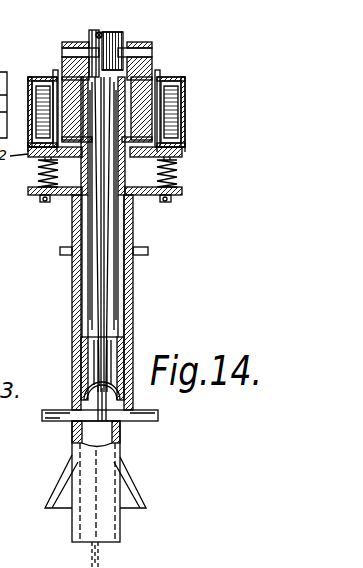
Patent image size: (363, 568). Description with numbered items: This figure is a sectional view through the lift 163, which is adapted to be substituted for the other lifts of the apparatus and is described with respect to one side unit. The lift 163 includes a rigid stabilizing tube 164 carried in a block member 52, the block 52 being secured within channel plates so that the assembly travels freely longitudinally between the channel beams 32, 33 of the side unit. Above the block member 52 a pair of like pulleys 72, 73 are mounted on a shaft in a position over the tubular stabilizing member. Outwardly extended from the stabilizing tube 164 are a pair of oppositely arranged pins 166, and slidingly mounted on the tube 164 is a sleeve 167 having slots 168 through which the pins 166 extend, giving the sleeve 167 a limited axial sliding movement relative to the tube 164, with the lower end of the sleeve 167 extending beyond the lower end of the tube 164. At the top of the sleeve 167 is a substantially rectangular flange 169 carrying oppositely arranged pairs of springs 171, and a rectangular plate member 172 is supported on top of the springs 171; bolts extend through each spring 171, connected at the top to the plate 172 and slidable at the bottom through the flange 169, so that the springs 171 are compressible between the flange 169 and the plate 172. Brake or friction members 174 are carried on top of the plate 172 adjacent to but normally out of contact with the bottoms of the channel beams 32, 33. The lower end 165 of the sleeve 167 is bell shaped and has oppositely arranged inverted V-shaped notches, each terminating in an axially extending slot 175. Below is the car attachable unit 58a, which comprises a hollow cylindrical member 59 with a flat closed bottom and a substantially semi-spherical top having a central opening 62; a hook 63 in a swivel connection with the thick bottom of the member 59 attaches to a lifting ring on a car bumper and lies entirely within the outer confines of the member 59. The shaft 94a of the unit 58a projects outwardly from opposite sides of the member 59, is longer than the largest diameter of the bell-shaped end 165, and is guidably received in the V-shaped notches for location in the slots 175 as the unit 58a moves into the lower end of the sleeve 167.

The pulley 72 is at (91, 45).
The pulley 73 is at (122, 39).
The channel beam 32 is at (38, 74).
The channel beam 33 is at (186, 111).
The block member 52 is at (157, 76).
The brake or friction members 174 is at (187, 150).
The plate member 172 is at (185, 155).
The springs 171 is at (183, 178).
The flange 169 is at (153, 198).
The stabilizing tube 164 is at (80, 180).
The lift 163 is at (136, 309).
The sleeve 167 is at (73, 310).
The slots 168 is at (68, 270).
The pins 166 is at (66, 254).
The cylindrical member 59 is at (78, 397).
The central opening 62 is at (121, 387).
The shaft 94a is at (50, 416).
The slot 175 is at (68, 464).
The lower end of the sleeve 165 is at (62, 481).
The car attachable unit 58a is at (126, 531).
The hook 63 is at (100, 555).